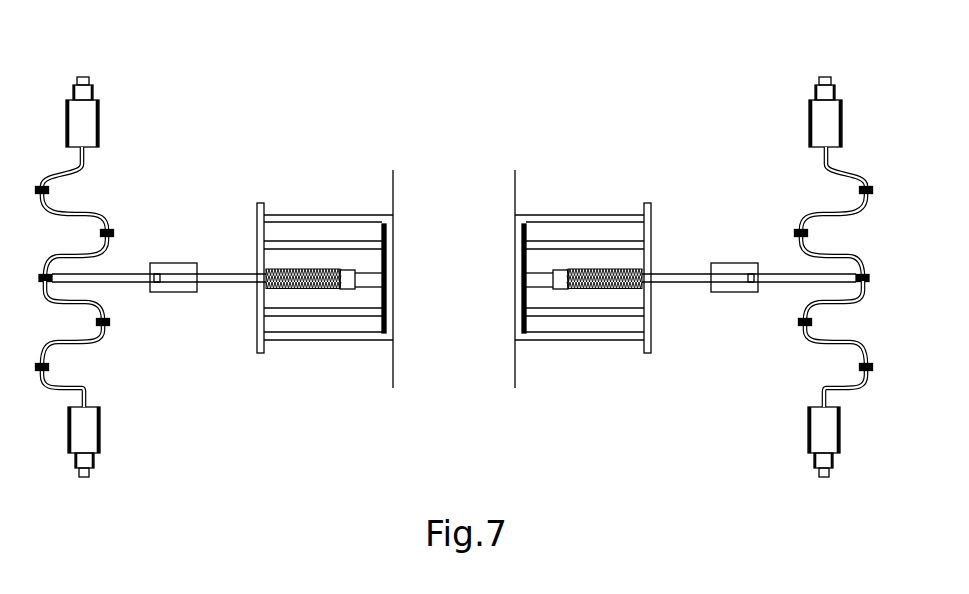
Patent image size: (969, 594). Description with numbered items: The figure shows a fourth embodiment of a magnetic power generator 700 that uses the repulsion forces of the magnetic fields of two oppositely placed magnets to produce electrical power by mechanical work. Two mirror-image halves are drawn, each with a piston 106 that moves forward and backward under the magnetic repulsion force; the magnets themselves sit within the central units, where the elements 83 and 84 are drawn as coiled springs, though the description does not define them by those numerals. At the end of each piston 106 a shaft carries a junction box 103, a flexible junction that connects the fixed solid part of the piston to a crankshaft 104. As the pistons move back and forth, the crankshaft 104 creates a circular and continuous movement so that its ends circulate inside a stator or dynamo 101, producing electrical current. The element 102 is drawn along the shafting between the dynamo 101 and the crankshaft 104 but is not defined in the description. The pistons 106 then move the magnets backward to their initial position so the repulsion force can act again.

The magnetic power generator 700 is at (425, 103).
The stator or dynamo 101 is at (88, 128).
The upper flexible cable 102 is at (113, 232).
The junction box 103 is at (158, 280).
The crankshaft 104 is at (85, 346).
The first spring 83 is at (305, 272).
The second spring 84 is at (603, 272).
The piston 106 is at (454, 278).